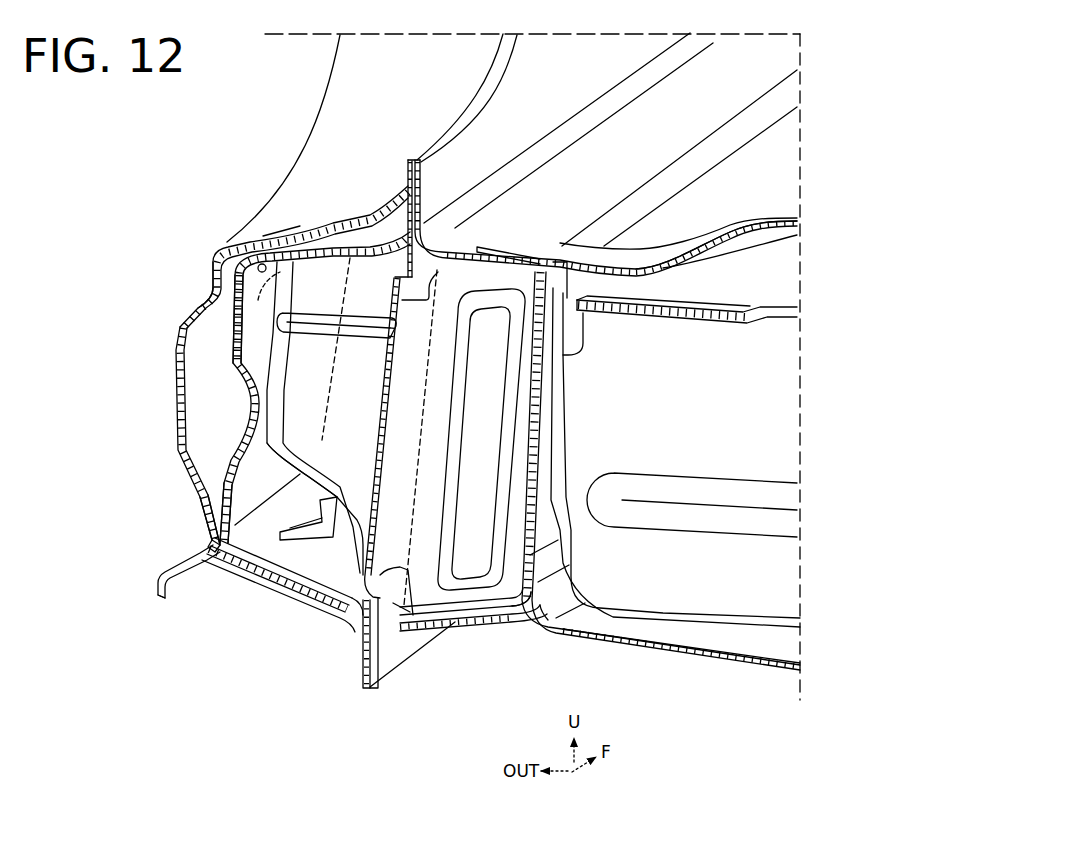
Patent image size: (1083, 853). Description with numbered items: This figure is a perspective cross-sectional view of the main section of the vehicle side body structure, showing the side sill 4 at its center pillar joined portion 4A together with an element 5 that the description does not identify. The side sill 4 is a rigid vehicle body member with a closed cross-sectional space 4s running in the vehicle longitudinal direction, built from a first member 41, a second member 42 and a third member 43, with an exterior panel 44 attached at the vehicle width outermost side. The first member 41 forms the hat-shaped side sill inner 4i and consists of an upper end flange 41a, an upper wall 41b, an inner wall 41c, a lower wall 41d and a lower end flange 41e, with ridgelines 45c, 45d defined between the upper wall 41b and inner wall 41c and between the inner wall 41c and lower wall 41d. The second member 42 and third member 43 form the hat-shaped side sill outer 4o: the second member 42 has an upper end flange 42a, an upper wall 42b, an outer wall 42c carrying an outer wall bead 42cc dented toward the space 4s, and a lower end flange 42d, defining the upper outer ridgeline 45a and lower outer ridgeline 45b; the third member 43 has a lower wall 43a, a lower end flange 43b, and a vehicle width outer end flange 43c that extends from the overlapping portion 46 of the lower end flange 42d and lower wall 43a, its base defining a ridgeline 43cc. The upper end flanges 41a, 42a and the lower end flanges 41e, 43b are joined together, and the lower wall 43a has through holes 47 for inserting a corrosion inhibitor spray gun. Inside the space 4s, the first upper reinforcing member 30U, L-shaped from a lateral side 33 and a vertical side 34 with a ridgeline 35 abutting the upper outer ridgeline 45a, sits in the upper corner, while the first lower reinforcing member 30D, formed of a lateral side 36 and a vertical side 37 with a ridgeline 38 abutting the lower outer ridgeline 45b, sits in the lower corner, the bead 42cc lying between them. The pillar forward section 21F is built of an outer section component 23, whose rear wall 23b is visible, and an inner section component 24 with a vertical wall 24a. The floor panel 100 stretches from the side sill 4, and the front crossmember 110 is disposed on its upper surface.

The side sill 4 is at (433, 712).
The center pillar joined portion 4A is at (203, 227).
The side sill inner 4i is at (440, 660).
The side sill outer 4o is at (258, 650).
The closed cross-sectional space 4s is at (484, 530).
The hinge pillar 5 is at (300, 86).
The pillar forward section 21F is at (516, 636).
The outer section component 23 is at (267, 348).
The rear wall 23b is at (290, 380).
The inner section component 24 is at (424, 622).
The vertical wall 24a is at (492, 368).
The first upper reinforcing member 30U is at (268, 270).
The first lower reinforcing member 30D is at (221, 485).
The lateral side 33 is at (282, 265).
The vertical side 34 is at (253, 307).
The ridgeline 35 is at (240, 285).
The lateral side 36 is at (250, 572).
The vertical side 37 is at (230, 500).
The ridgeline 38 is at (207, 510).
The first member 41 is at (454, 630).
The upper end flange 41a is at (423, 180).
The upper wall 41b is at (463, 249).
The inner wall 41c is at (551, 437).
The lower wall 41d is at (476, 626).
The lower end flange 41e is at (372, 680).
The second member 42 is at (240, 428).
The upper end flange 42a is at (407, 184).
The upper wall 42b is at (348, 225).
The outer wall 42c is at (235, 350).
The outer wall bead 42cc is at (272, 425).
The lower end flange 42d is at (264, 578).
The third member 43 is at (337, 609).
The lower wall 43a is at (320, 600).
The lower end flange 43b is at (362, 668).
The vehicle width outer end flange 43c is at (200, 570).
The ridgeline 43cc is at (212, 544).
The exterior panel 44 is at (212, 283).
The upper outer ridgeline 45a is at (253, 253).
The lower outer ridgeline 45b is at (220, 543).
The ridgeline 45c is at (550, 261).
The ridgeline 45d is at (524, 628).
The overlapping portion 46 is at (245, 571).
The through hole 47 is at (335, 533).
The floor panel 100 is at (688, 655).
The front crossmember 110 is at (772, 304).